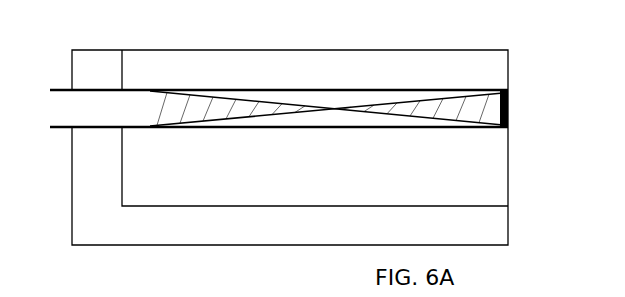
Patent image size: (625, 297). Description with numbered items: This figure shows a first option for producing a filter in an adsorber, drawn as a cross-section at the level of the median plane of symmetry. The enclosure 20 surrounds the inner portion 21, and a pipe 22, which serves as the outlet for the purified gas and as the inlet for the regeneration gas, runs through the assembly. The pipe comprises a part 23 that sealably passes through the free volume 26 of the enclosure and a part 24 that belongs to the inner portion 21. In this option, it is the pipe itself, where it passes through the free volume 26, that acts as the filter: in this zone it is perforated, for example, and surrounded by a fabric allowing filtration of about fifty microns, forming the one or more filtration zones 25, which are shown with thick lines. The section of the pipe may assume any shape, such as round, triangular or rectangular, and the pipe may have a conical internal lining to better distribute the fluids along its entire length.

The enclosure 20 is at (94, 52).
The inner portion 21 is at (468, 206).
The outlet pipe 22 is at (50, 127).
The part of the pipe passing through the free volume 23 is at (100, 128).
The part of the pipe belonging to the inner portion 24 is at (216, 91).
The filtration zone 25 is at (348, 112).
The free volume V1 26 is at (242, 165).